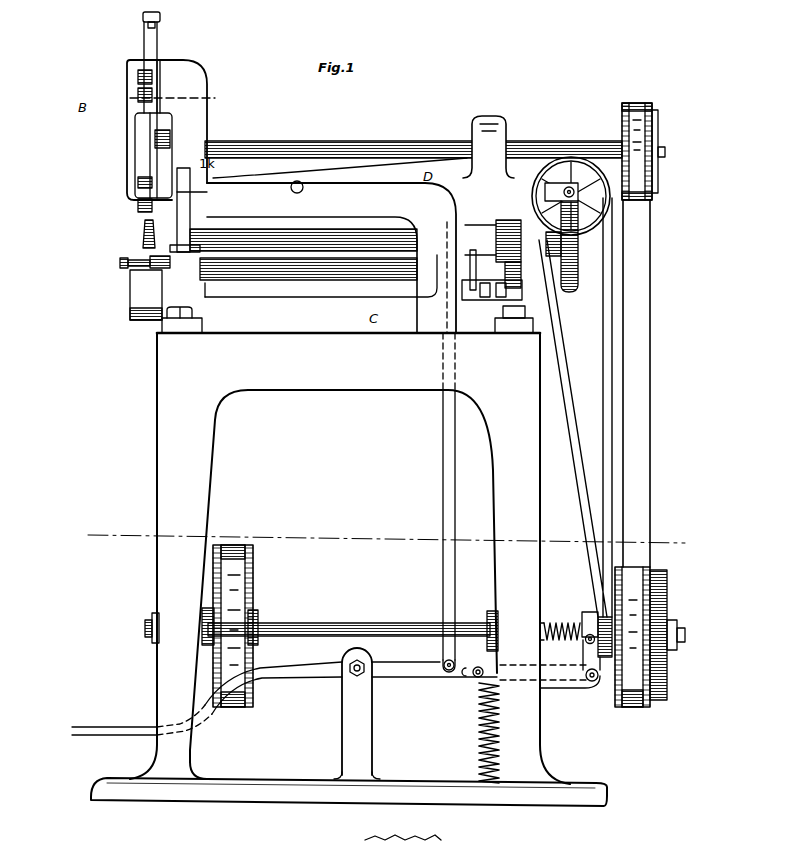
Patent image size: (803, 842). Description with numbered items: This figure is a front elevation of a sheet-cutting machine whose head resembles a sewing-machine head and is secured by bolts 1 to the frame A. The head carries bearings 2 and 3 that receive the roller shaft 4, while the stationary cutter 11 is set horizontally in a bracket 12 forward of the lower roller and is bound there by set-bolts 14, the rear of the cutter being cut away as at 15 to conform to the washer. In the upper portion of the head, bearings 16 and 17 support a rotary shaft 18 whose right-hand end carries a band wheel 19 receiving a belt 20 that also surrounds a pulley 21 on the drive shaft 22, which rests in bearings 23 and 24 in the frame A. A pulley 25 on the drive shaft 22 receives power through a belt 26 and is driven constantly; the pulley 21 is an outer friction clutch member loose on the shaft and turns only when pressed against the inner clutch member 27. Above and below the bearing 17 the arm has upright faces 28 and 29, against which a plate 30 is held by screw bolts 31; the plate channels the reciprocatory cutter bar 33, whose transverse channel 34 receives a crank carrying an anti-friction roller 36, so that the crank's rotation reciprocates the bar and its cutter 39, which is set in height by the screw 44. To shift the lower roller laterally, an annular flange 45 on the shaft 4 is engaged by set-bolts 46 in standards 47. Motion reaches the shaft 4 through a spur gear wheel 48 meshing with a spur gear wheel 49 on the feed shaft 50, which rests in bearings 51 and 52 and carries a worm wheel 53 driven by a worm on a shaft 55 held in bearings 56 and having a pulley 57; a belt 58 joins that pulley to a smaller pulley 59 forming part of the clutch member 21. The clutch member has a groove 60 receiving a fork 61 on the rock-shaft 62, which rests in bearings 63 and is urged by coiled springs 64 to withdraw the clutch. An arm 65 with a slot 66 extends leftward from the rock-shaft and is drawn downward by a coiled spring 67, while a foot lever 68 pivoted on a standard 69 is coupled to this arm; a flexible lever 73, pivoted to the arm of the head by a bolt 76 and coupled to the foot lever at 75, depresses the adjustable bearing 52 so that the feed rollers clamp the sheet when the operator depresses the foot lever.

The bolt 1 is at (190, 313).
The bearing 2 is at (410, 268).
The bearing 3 is at (210, 262).
The roller shaft 4 is at (314, 290).
The stationary cutter 11 is at (475, 677).
The bracket 12 is at (128, 278).
The set-bolt 14 is at (120, 262).
The cut-away portion 15 is at (166, 301).
The bearing 16 is at (468, 138).
The bearing 17 is at (88, 535).
The rotary shaft 18 is at (320, 148).
The band wheel 19 is at (652, 118).
The belt 20 is at (647, 240).
The pulley (outer friction clutch member) 21 is at (652, 572).
The drive shaft 22 is at (340, 624).
The bearing 23 is at (489, 614).
The bearing 24 is at (152, 616).
The pulley 25 is at (253, 576).
The belt 26 is at (236, 548).
The inner friction clutch member 27 is at (668, 600).
The face 28 is at (163, 75).
The face 29 is at (186, 175).
The plate 30 is at (138, 73).
The screw bolt 31 is at (138, 93).
The reciprocatory cutter bar 33 is at (146, 37).
The transverse channel 34 is at (156, 134).
The anti-friction roller 36 is at (170, 137).
The reciprocatory cutter 39 is at (145, 229).
The screw 44 is at (160, 17).
The annular flange 45 is at (495, 268).
The set-bolt 46 is at (492, 295).
The standard 47 is at (478, 294).
The spur gear wheel 48 is at (518, 313).
The spur gear wheel 49 is at (506, 224).
The feed shaft 50 is at (320, 233).
The bearing 51 is at (413, 235).
The bearing 52 is at (226, 226).
The worm wheel 53 is at (575, 273).
The shaft 55 is at (571, 196).
The bearing 56 is at (561, 192).
The pulley 57 is at (578, 226).
The belt 58 is at (603, 322).
The pulley 59 is at (590, 614).
The groove 60 is at (584, 620).
The fork 61 is at (602, 643).
The rock-shaft 62 is at (591, 681).
The bearing 63 is at (585, 689).
The contracting coiled spring 64 is at (560, 640).
The arm 65 is at (490, 668).
The slot 66 is at (434, 661).
The contracting coiled spring 67 is at (480, 725).
The foot lever 68 is at (130, 735).
The standard 69 is at (372, 702).
The lever 73 is at (443, 460).
The coupling point 75 is at (447, 671).
The bolt 76 is at (297, 181).
The frame A is at (350, 558).